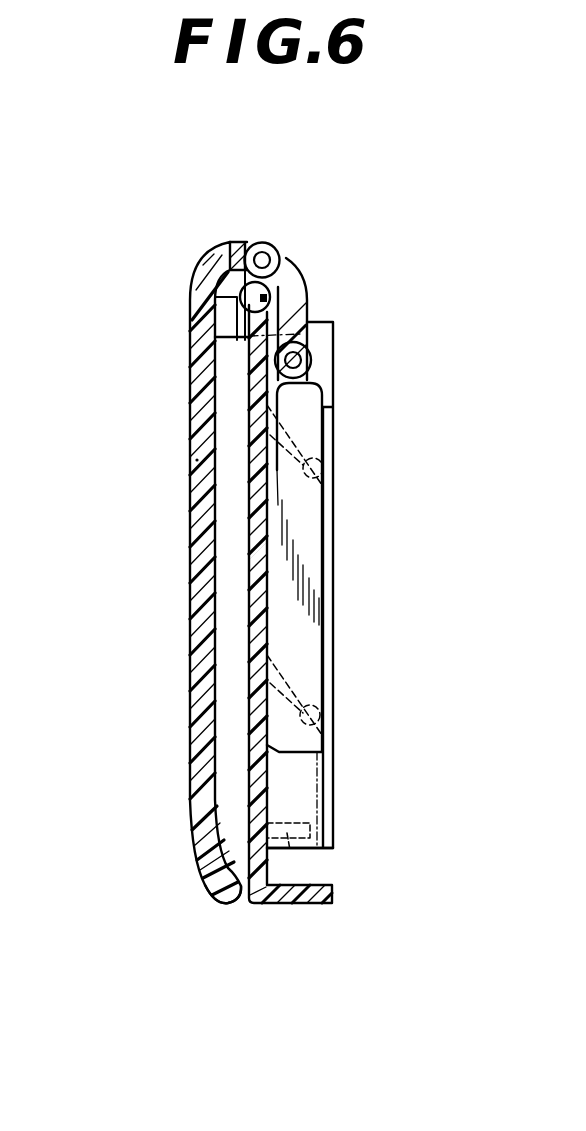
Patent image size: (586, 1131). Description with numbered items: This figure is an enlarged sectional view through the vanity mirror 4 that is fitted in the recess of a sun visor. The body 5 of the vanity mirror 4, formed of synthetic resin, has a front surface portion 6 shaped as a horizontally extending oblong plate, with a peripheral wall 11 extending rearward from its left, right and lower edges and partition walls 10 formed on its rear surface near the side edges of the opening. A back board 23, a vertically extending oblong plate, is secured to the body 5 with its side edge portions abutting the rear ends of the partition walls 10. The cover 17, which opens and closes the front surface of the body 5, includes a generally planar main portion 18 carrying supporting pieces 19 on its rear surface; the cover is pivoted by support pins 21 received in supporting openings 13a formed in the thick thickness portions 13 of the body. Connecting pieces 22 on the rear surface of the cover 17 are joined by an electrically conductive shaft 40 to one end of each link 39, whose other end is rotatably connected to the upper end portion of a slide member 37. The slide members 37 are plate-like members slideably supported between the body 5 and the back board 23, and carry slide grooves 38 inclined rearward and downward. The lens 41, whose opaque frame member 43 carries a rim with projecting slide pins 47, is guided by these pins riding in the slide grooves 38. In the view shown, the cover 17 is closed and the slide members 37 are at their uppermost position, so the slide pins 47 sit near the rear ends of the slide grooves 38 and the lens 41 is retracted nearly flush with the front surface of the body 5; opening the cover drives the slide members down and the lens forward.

The vanity mirror 4 is at (92, 152).
The body 5 is at (336, 642).
The front surface portion 6 is at (250, 533).
The partition wall 10 is at (318, 854).
The peripheral wall 11 is at (333, 894).
The thick thickness portion 13 is at (190, 302).
The supporting opening 13a is at (292, 285).
The cover 17 is at (192, 835).
The main portion 18 is at (190, 739).
The supporting piece 19 is at (235, 334).
The support pin 21 is at (272, 304).
The connecting piece 22 is at (243, 242).
The back board 23 is at (333, 596).
The slide member 37 is at (312, 642).
The slide groove 38 is at (290, 432).
The link 39 is at (306, 333).
The shaft 40 is at (272, 250).
The lens 41 is at (320, 797).
The frame member 43 is at (290, 850).
The slide pin 47 is at (325, 480).